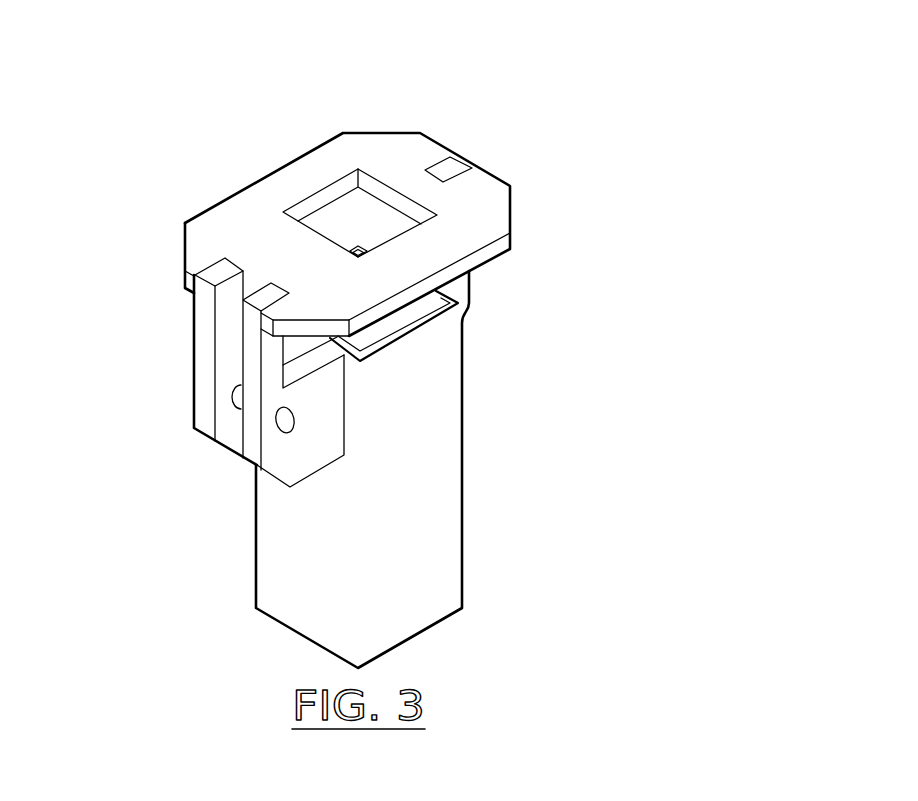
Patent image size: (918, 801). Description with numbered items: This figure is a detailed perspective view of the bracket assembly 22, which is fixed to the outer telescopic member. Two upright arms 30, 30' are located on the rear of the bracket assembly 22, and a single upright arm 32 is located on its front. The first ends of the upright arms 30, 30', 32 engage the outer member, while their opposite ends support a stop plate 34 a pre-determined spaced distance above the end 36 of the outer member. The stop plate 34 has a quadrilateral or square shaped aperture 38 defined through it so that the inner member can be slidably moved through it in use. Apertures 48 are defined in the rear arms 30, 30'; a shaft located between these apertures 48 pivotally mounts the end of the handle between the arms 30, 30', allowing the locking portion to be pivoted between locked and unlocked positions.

The bracket assembly 22 is at (183, 203).
The upright arm 30 is at (152, 361).
The upright arm 30' is at (195, 396).
The upright arm 32 is at (462, 287).
The stop plate 34 is at (402, 158).
The end of outer member 36 is at (447, 342).
The aperture 38 is at (347, 211).
The aperture 48 is at (230, 393).